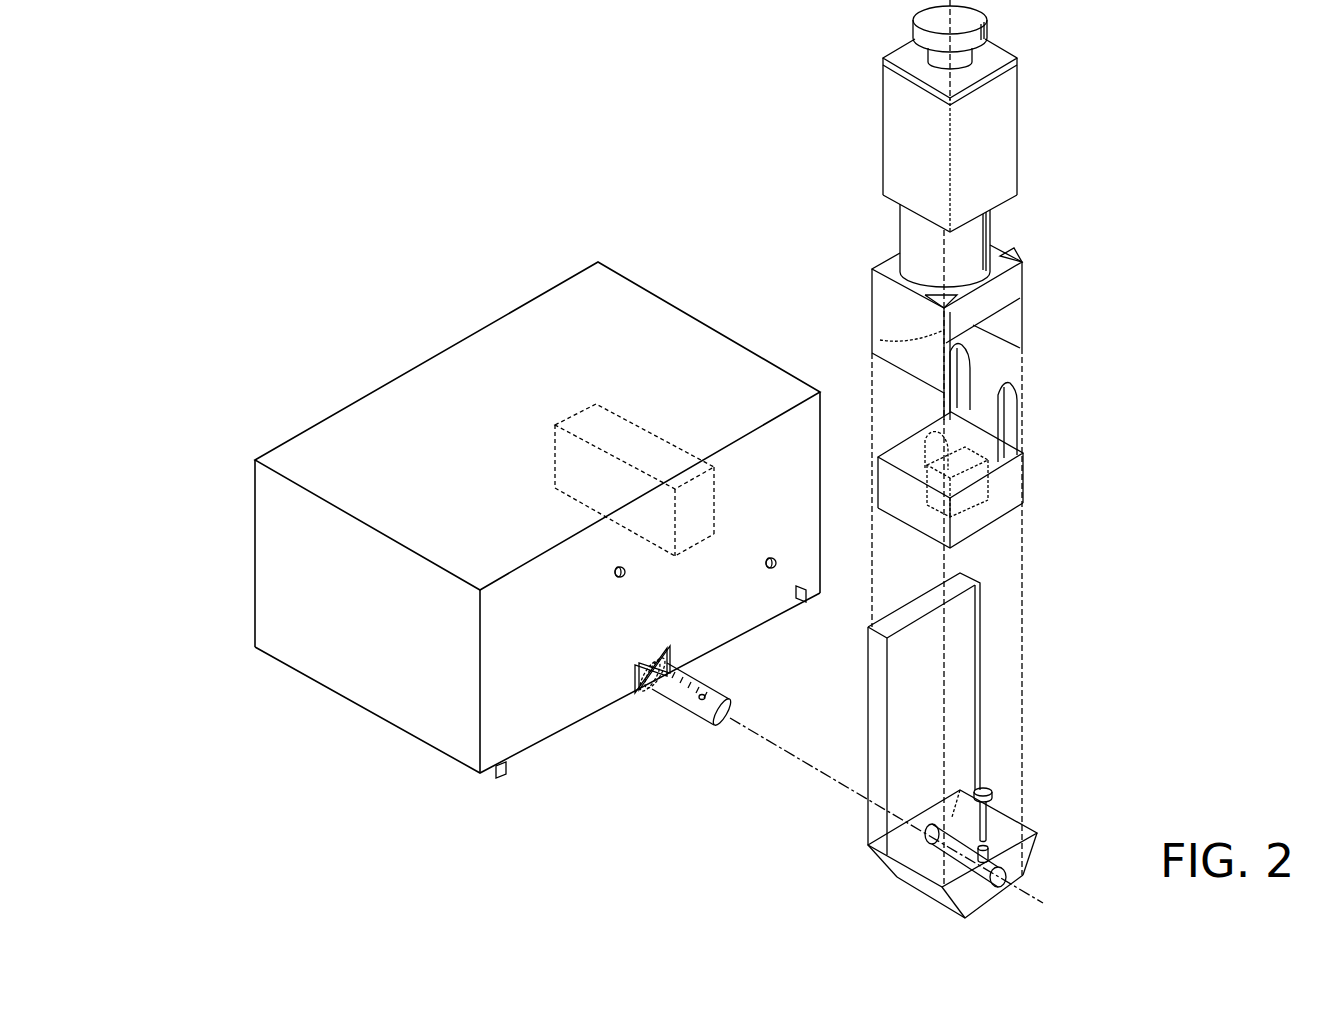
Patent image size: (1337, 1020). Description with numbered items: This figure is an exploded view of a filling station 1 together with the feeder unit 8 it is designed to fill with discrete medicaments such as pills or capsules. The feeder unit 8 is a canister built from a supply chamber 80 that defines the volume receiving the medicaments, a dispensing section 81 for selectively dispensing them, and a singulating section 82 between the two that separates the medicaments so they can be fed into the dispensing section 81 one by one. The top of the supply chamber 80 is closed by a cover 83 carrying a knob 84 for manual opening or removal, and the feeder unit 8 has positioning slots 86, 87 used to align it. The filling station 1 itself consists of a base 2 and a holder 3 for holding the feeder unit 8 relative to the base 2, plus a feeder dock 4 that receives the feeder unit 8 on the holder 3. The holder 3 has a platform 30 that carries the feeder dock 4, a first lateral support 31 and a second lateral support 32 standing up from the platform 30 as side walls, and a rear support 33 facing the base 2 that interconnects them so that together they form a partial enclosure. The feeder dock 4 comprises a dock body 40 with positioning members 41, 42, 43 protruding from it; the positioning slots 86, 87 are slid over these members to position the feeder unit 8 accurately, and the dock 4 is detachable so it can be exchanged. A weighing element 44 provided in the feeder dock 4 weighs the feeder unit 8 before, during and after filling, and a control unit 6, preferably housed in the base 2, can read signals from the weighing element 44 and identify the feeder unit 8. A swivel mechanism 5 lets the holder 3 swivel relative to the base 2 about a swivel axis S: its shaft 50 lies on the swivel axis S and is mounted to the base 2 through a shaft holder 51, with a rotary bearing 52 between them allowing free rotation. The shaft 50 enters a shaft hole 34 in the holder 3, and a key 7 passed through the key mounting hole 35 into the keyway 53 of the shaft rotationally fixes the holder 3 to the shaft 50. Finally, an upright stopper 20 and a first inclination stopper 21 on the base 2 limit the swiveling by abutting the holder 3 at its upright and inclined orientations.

The filling station 1 is at (364, 220).
The base 2 is at (265, 580).
The upright stopper 20 is at (613, 573).
The first inclination stopper 21 is at (773, 572).
The holder 3 is at (950, 751).
The platform 30 is at (895, 878).
The first lateral support 31 is at (878, 725).
The second lateral support 32 is at (975, 690).
The rear support 33 is at (908, 625).
The shaft hole 34 is at (1003, 860).
The key mounting hole 35 is at (1000, 850).
The feeder dock 4 is at (964, 460).
The dock body 40 is at (910, 513).
The positioning member 41 is at (932, 440).
The positioning member 42 is at (1013, 432).
The positioning member 43 is at (965, 378).
The weighing element 44 is at (983, 493).
The swivel mechanism 5 is at (822, 752).
The shaft 50 is at (690, 718).
The shaft holder 51 is at (643, 703).
The rotary bearing 52 is at (652, 660).
The keyway 53 is at (706, 698).
The control unit 6 is at (660, 452).
The key 7 is at (992, 792).
The feeder unit 8 is at (950, 442).
The supply chamber 80 is at (1005, 100).
The dispensing section 81 is at (1003, 290).
The singulating section 82 is at (975, 228).
The cover 83 is at (1002, 55).
The knob 84 is at (925, 25).
The positioning slot 86 is at (933, 308).
The positioning slot 87 is at (1008, 262).
The swivel axis S is at (1012, 887).